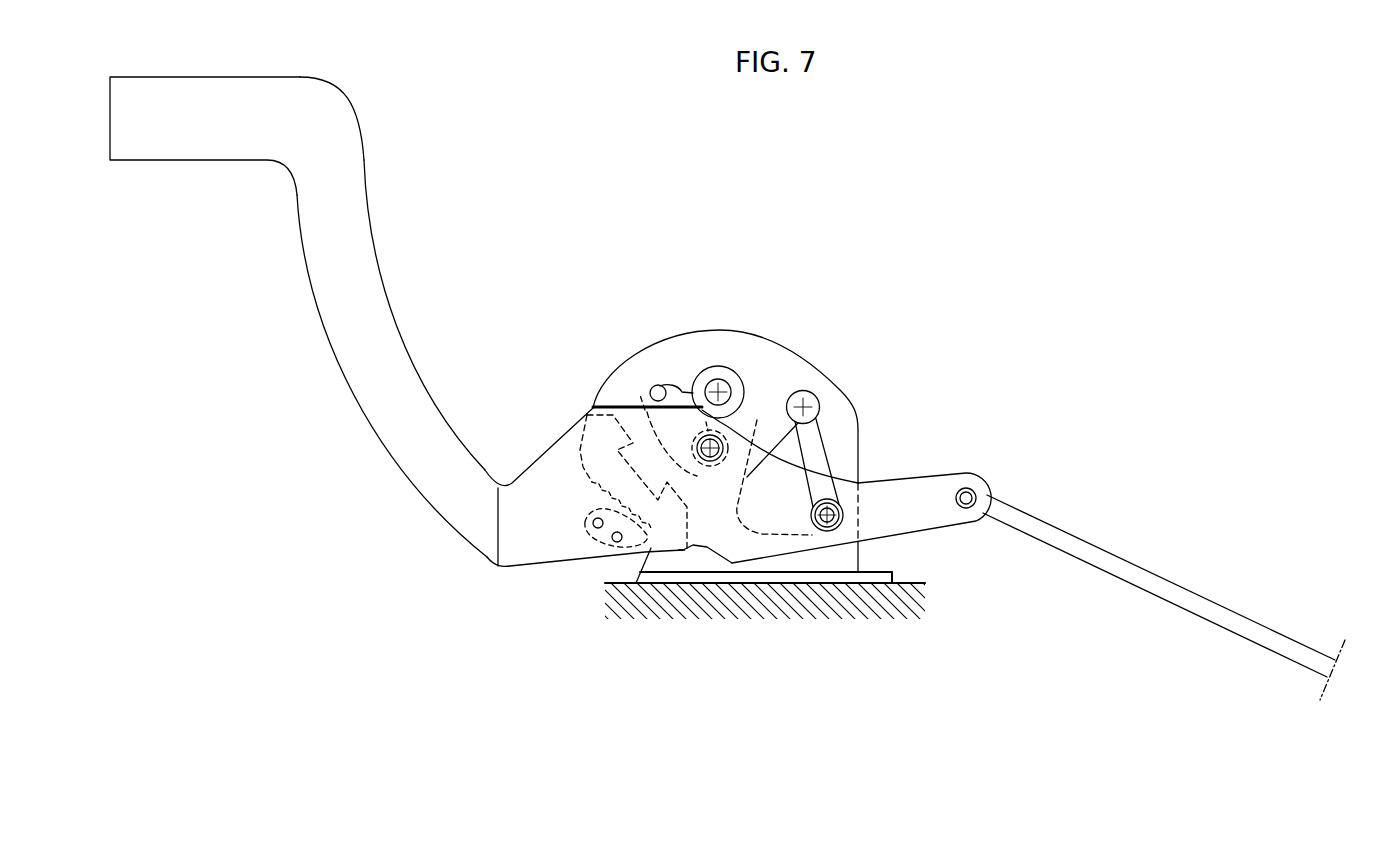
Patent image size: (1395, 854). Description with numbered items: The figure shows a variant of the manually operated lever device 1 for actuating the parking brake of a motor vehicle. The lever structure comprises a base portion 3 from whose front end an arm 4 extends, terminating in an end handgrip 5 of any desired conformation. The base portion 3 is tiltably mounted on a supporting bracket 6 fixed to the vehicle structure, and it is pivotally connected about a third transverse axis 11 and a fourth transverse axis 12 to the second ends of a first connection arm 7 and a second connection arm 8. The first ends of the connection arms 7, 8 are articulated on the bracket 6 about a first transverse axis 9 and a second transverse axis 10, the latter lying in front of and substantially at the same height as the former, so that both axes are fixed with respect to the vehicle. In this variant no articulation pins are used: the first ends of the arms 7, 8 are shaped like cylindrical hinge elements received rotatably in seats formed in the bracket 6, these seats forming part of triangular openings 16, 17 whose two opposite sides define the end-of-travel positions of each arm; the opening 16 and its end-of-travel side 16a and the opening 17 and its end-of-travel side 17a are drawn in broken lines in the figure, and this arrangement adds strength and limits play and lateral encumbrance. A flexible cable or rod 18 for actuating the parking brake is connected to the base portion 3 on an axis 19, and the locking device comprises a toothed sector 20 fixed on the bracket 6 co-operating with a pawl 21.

The lever device 1 is at (931, 429).
The base portion 3 is at (530, 497).
The arm 4 is at (372, 398).
The handgrip 5 is at (330, 115).
The supporting bracket 6 is at (793, 346).
The first connection arm 7 is at (836, 430).
The second connection arm 8 is at (704, 352).
The first transverse axis 9 is at (816, 396).
The second transverse axis 10 is at (729, 382).
The third transverse axis 11 is at (846, 508).
The fourth transverse axis 12 is at (737, 462).
The triangular opening 16 is at (770, 520).
The lever pin 16a is at (829, 531).
The triangular opening 17 is at (660, 386).
The spring end 17a is at (695, 466).
The flexible cable or rod 18 is at (1154, 566).
The axis 19 is at (976, 489).
The toothed sector 20 is at (584, 470).
The pawl 21 is at (603, 540).